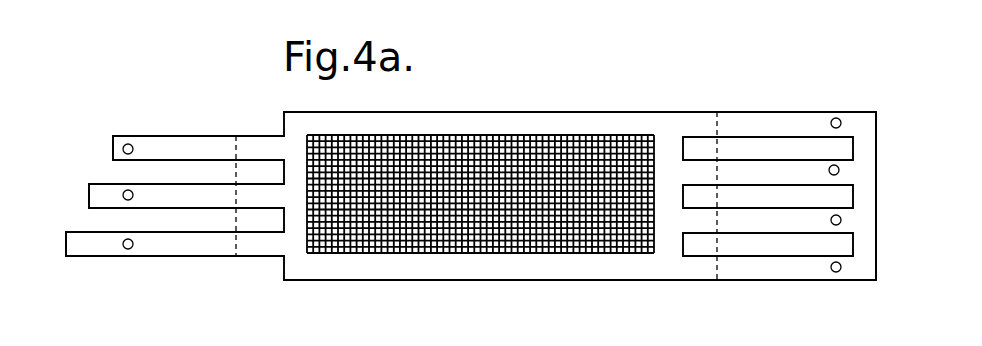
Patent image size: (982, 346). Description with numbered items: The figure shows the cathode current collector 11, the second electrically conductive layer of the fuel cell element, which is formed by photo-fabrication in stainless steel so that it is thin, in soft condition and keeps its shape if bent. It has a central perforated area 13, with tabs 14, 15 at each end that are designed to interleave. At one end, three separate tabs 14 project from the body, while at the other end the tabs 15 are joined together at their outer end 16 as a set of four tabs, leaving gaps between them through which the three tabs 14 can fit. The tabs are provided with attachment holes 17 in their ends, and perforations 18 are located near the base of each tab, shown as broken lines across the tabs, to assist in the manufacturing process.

The cathode current collector 11 is at (608, 105).
The perforated area 13 is at (547, 138).
The tabs 14 is at (170, 142).
The tabs 15 is at (797, 121).
The outer end 16 is at (863, 245).
The attachment holes 17 is at (127, 190).
The perforations 18 is at (237, 135).